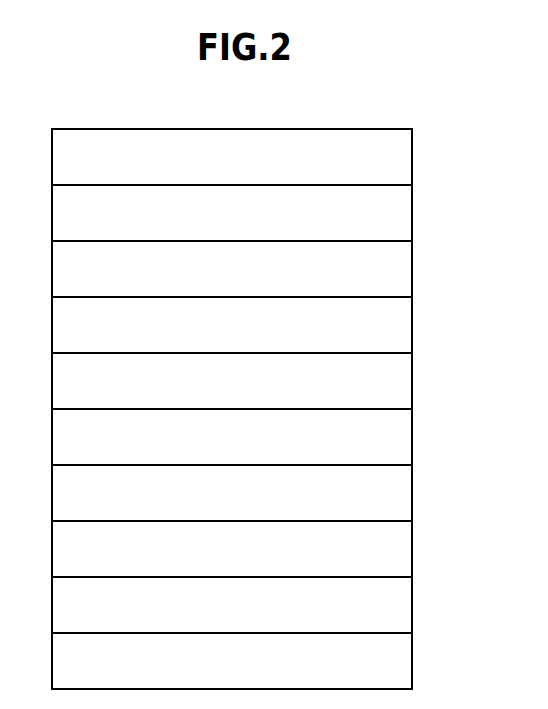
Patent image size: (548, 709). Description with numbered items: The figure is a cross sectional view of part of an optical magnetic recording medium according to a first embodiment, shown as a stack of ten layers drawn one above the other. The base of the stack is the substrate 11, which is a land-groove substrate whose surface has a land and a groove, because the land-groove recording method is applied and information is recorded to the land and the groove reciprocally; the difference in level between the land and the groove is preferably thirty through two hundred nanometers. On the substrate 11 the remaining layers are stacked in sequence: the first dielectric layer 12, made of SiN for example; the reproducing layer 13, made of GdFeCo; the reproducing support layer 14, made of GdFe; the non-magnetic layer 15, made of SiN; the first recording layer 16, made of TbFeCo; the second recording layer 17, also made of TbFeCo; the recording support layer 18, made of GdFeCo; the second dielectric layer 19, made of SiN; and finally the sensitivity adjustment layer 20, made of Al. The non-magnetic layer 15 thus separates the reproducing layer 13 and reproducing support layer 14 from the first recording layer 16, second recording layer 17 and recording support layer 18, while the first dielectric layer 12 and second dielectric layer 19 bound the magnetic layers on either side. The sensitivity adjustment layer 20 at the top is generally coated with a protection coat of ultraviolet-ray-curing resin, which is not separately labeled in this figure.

The substrate 11 is at (412, 155).
The first dielectric layer 12 is at (412, 211).
The reproducing layer 13 is at (412, 267).
The reproducing support layer 14 is at (412, 323).
The non-magnetic layer 15 is at (412, 379).
The first recording layer 16 is at (412, 435).
The second recording layer 17 is at (412, 491).
The recording support layer 18 is at (412, 547).
The second dielectric layer 19 is at (412, 603).
The sensitivity adjustment layer 20 is at (412, 659).